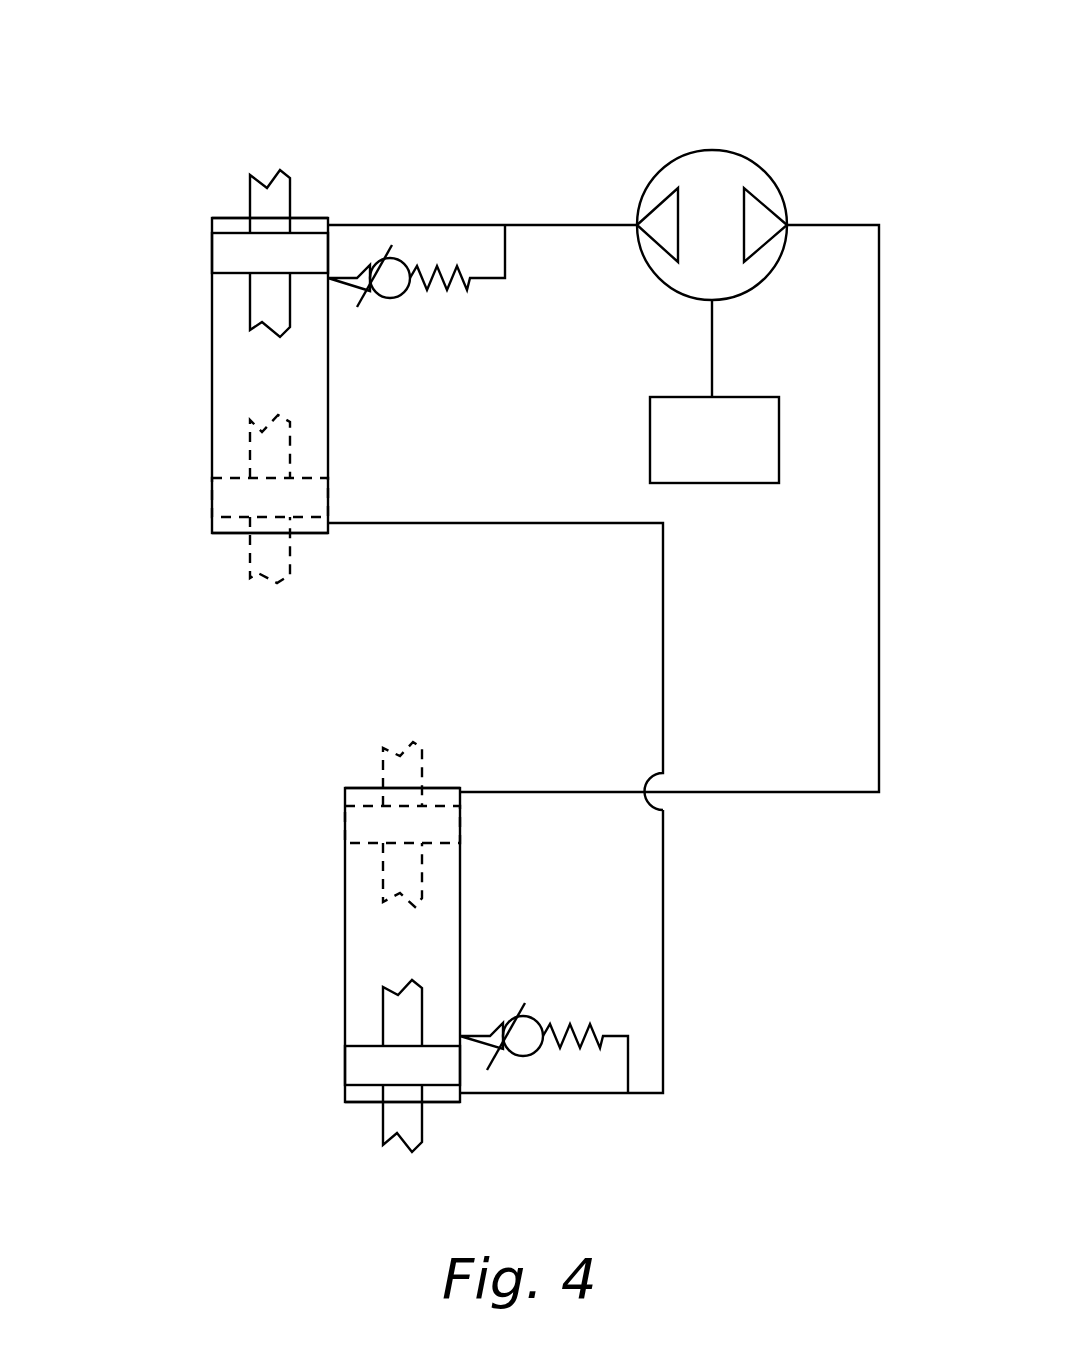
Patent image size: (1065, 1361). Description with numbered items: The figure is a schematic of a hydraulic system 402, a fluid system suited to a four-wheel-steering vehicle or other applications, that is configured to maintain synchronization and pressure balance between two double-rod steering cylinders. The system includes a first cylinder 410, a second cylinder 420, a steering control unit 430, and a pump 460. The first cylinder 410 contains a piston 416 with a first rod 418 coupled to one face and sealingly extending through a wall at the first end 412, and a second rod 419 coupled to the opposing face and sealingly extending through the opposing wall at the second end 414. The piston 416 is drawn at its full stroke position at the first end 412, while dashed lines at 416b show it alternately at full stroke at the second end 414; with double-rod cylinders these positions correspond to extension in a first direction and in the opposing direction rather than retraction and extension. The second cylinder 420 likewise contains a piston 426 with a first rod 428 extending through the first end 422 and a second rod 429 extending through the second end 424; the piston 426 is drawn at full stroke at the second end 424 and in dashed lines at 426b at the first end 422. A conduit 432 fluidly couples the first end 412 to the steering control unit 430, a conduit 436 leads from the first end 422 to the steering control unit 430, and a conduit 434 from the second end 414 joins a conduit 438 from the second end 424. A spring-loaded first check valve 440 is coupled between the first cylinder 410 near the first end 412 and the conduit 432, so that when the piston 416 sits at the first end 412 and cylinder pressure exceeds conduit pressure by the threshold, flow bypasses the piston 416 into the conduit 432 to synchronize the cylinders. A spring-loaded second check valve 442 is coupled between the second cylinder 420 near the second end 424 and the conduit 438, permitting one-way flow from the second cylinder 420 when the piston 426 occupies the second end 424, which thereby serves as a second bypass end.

The hydraulic system 402 is at (469, 618).
The first cylinder 410 is at (212, 345).
The first end 412 is at (212, 220).
The second end 414 is at (213, 528).
The piston 416 is at (213, 217).
The piston full stroke position at second end 416b is at (212, 453).
The first rod 418 is at (250, 207).
The second rod 419 is at (250, 297).
The second cylinder 420 is at (342, 907).
The first end 422 is at (347, 790).
The second end 424 is at (345, 1087).
The piston 426 is at (365, 1043).
The piston full stroke position at first end 426b is at (360, 802).
The first rod 428 is at (380, 767).
The second rod 429 is at (383, 868).
The steering control unit 430 is at (643, 263).
The conduit 432 is at (362, 224).
The conduit 434 is at (437, 523).
The conduit 436 is at (487, 792).
The conduit 438 is at (490, 1095).
The first check valve 440 is at (410, 288).
The second check valve 442 is at (537, 1013).
The pump 460 is at (727, 487).